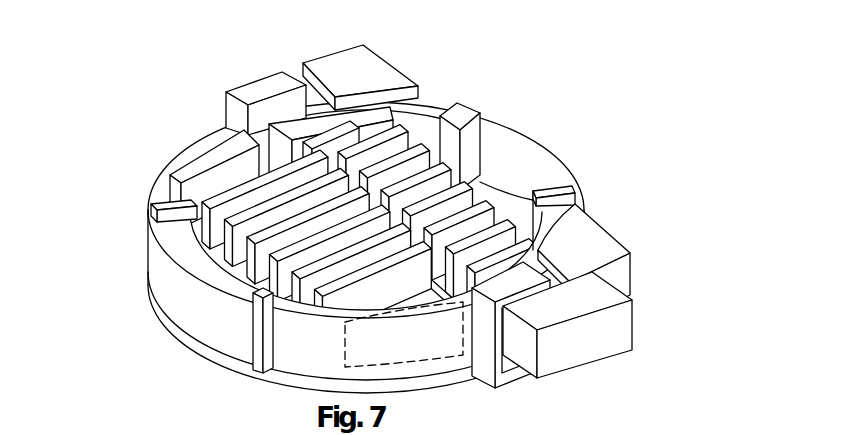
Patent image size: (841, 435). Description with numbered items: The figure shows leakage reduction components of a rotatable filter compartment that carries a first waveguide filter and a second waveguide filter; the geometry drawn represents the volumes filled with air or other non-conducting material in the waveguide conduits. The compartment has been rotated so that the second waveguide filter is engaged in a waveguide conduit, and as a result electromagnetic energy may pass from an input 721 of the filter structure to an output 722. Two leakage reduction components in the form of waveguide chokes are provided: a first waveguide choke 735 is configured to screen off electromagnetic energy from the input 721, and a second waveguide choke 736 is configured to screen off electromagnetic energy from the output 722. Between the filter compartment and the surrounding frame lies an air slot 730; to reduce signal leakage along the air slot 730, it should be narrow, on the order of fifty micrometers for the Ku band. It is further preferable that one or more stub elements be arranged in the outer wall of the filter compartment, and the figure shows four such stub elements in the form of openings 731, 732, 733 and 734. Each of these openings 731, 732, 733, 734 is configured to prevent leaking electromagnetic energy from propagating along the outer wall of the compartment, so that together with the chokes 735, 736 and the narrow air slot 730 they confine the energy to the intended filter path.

The input 721 is at (237, 68).
The output 722 is at (581, 327).
The air slot 730 is at (302, 230).
The opening 731 is at (113, 205).
The opening 732 is at (528, 142).
The opening 733 is at (630, 176).
The first waveguide choke 735 is at (638, 261).
The second waveguide choke 736 is at (407, 61).
The opening 734 is at (189, 347).